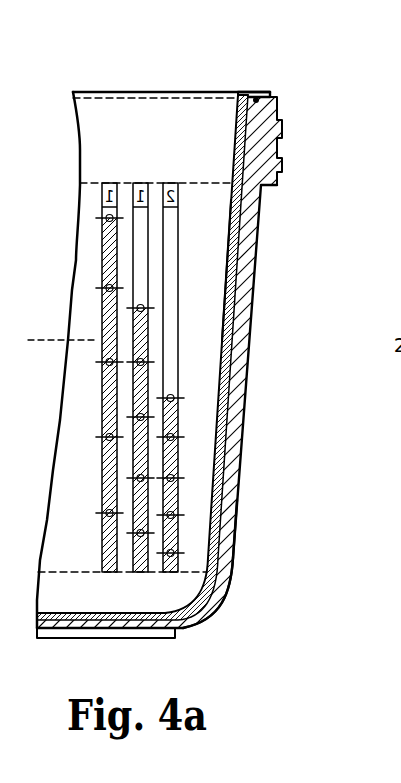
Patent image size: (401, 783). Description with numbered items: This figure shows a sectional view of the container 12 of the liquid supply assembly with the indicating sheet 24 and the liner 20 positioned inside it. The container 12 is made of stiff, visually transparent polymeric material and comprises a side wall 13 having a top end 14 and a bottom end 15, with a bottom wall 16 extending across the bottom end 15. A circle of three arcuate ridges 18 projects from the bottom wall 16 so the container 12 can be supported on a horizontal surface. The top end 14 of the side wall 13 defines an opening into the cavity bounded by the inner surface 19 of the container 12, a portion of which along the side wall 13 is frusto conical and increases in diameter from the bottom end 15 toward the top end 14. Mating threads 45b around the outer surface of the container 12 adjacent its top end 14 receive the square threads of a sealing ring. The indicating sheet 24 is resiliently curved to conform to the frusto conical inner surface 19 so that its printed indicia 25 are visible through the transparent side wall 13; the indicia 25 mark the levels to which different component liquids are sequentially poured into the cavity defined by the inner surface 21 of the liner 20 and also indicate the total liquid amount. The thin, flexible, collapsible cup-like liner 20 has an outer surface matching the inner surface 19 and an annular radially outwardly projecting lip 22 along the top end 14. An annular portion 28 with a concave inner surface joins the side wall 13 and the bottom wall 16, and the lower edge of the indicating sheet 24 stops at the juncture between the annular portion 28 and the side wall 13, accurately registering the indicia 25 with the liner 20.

The container 12 is at (200, 365).
The side wall 13 is at (246, 380).
The top end 14 is at (258, 101).
The bottom end 15 is at (232, 565).
The bottom wall 16 is at (152, 632).
The arcuate ridges 18 is at (84, 632).
The inner surface 19 is at (233, 272).
The liner 20 is at (240, 120).
The inner surface 21 is at (117, 120).
The lip 22 is at (257, 97).
The indicating sheet 24 is at (250, 298).
The indicia 25 is at (95, 340).
The annular portion 28 is at (215, 610).
The mating threads 45b is at (282, 165).